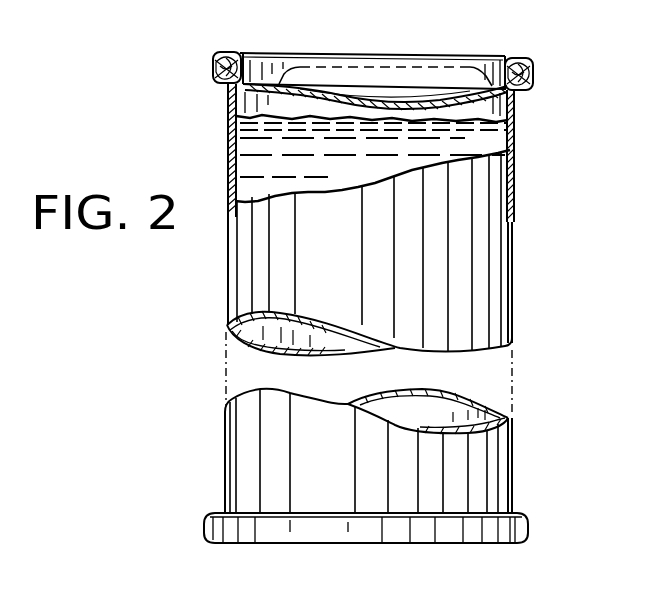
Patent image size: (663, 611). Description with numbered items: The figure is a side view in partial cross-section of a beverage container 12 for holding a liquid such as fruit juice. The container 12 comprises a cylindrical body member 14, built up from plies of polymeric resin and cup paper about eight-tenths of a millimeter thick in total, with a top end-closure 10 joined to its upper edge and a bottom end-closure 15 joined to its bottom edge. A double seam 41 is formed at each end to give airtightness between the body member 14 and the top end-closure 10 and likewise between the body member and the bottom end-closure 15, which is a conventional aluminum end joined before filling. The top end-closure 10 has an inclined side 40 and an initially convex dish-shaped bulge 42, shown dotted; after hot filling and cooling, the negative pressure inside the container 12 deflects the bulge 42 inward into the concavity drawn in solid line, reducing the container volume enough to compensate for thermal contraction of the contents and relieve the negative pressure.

The top end-closure 10 is at (440, 55).
The double seam 41 is at (213, 72).
The inclined side 40 is at (294, 85).
The dish-shaped bulge portion 42 is at (383, 66).
The container 12 is at (525, 215).
The cylindrical body member 14 is at (481, 283).
The bottom end-closure 15 is at (392, 545).